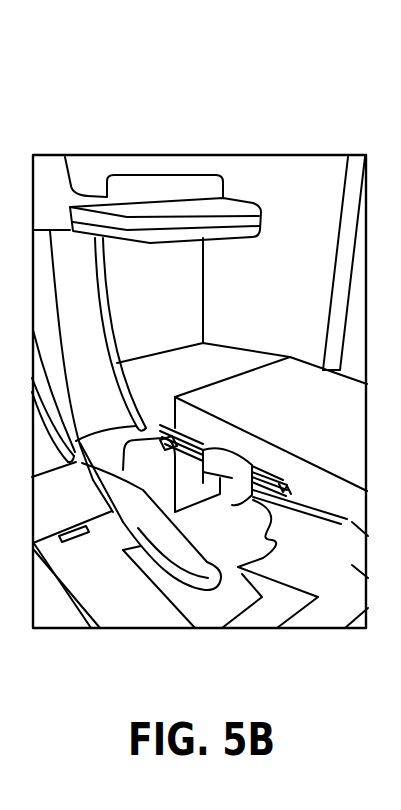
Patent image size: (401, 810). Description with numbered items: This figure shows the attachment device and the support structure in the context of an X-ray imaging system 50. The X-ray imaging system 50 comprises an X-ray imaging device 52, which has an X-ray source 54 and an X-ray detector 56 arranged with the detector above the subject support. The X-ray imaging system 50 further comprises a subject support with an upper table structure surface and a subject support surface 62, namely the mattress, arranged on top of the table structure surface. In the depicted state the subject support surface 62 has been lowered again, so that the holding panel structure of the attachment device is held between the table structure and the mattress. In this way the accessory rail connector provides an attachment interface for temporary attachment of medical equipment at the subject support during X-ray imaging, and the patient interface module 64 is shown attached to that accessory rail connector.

The X-ray imaging system 50 is at (273, 238).
The X-ray imaging device 52 is at (207, 128).
The X-ray source 54 is at (157, 480).
The X-ray detector 56 is at (158, 212).
The subject support surface 62 is at (347, 510).
The patient interface module 64 is at (232, 478).